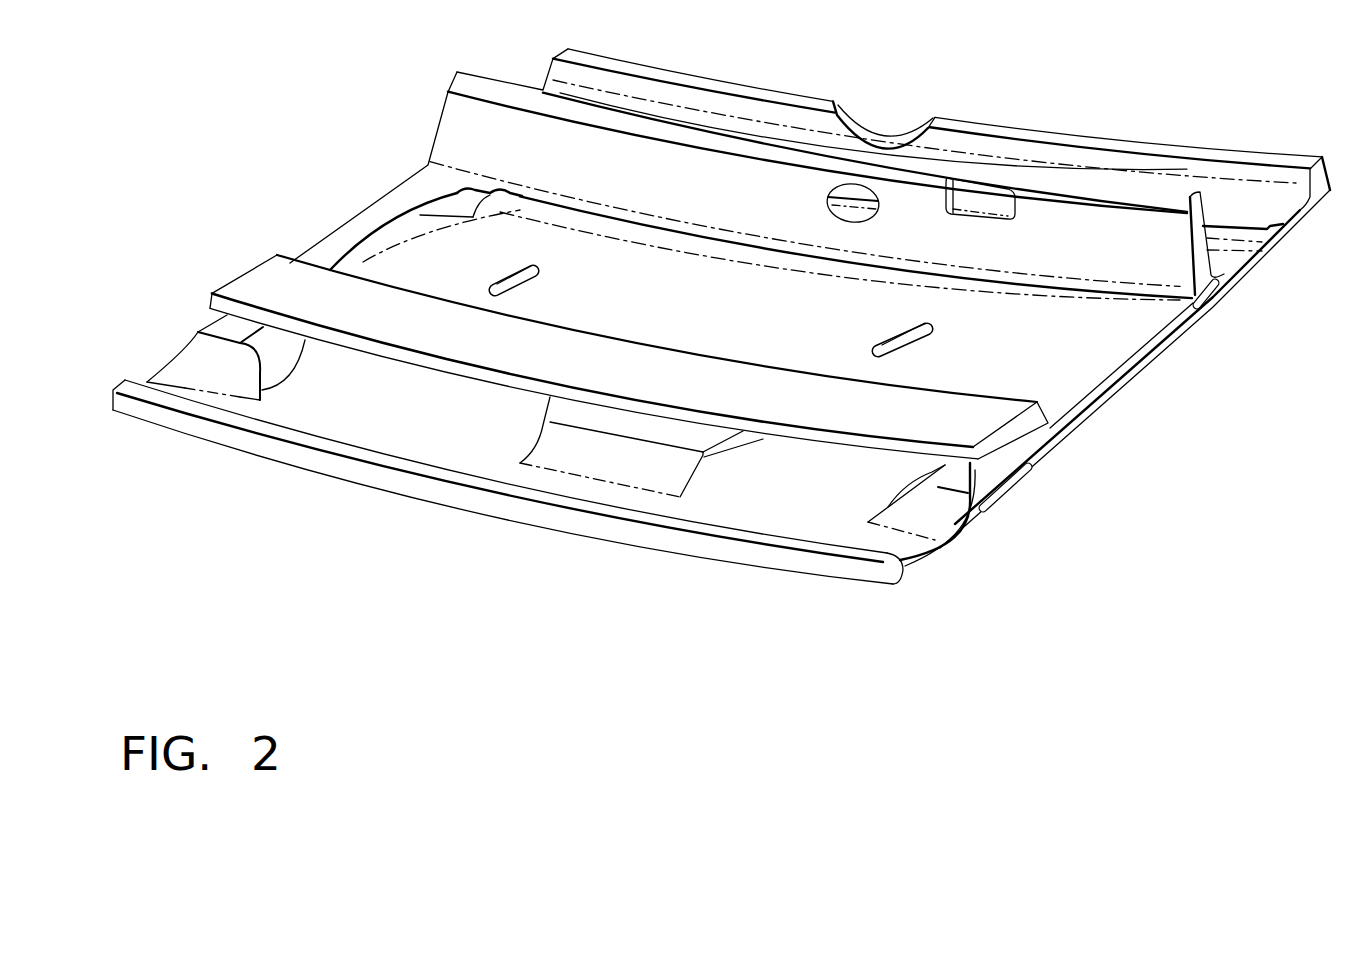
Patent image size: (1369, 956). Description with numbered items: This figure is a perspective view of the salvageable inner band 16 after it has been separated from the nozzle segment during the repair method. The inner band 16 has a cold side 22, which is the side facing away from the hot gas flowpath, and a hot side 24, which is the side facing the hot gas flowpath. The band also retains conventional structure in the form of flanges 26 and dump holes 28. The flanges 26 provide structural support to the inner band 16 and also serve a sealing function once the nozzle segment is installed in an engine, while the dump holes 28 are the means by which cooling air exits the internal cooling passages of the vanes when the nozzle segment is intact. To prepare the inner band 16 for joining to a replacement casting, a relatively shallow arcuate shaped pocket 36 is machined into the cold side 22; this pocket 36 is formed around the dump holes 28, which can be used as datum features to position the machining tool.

The inner band 16 is at (1212, 147).
The cold side 22 is at (360, 232).
The hot side 24 is at (1077, 440).
The flanges 26 is at (1197, 250).
The dump holes 28 is at (508, 281).
The pocket 36 is at (698, 317).